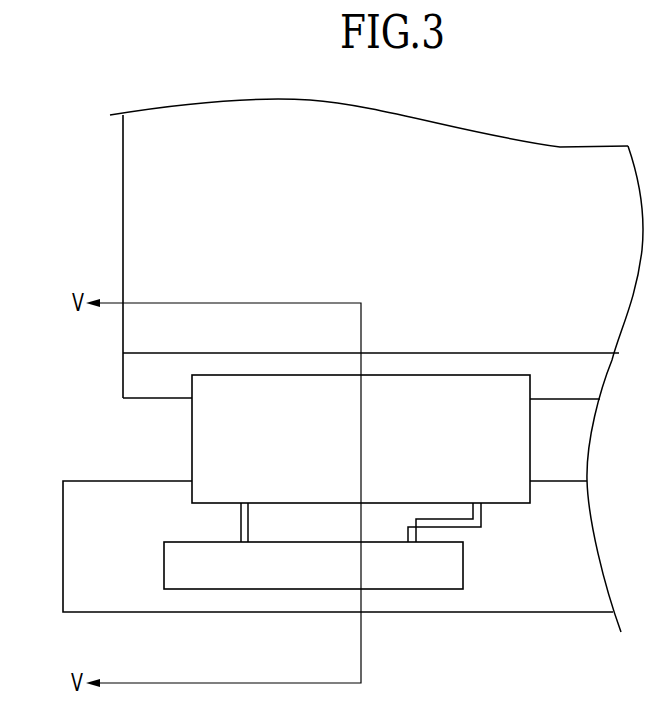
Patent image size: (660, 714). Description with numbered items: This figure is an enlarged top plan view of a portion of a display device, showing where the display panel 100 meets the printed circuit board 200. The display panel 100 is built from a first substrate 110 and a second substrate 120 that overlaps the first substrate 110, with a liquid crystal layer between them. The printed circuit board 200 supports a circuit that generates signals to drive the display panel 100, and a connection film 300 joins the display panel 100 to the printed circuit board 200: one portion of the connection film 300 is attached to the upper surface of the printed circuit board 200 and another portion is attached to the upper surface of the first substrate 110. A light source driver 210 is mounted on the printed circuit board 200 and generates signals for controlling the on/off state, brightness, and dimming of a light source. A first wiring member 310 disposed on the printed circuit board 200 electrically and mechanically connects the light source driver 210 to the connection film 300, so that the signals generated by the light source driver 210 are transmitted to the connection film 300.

The display panel 100 is at (63, 330).
The first substrate 110 is at (127, 375).
The second substrate 120 is at (127, 337).
The printed circuit board 200 is at (128, 612).
The light source driver 210 is at (432, 589).
The connection film 300 is at (192, 432).
The first wiring member 310 is at (241, 523).